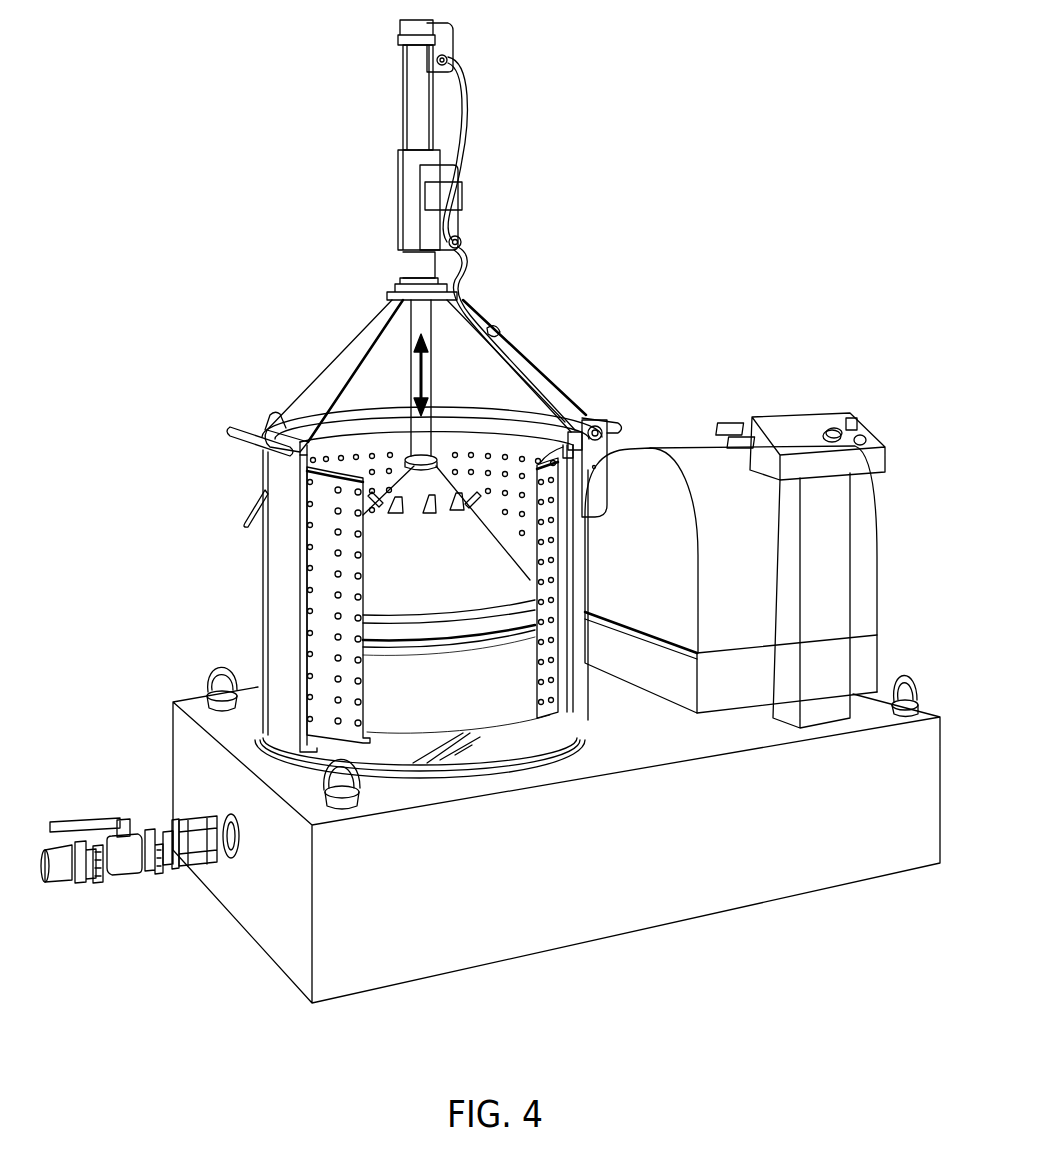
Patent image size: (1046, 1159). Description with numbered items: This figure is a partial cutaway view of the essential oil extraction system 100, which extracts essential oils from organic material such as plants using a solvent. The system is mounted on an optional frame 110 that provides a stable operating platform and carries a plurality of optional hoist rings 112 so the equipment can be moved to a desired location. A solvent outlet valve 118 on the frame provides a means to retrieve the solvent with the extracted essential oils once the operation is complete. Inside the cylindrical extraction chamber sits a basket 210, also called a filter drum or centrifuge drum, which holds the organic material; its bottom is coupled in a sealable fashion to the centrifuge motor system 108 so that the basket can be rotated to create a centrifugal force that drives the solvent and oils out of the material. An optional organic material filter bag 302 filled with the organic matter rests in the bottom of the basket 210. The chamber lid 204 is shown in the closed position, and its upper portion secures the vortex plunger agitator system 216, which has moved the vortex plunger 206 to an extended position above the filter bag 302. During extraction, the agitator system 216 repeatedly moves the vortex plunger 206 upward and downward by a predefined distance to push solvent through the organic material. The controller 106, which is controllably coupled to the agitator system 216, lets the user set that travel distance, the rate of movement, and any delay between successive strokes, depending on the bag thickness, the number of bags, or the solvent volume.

The essential oil extraction system 100 is at (228, 165).
The controller 106 is at (843, 562).
The centrifuge motor system 108 is at (697, 446).
The frame 110 is at (703, 887).
The hoist rings 112 is at (222, 662).
The solvent outlet valve 118 is at (127, 860).
The chamber lid 204 is at (323, 348).
The vortex plunger 206 is at (507, 572).
The basket 210 is at (320, 600).
The vortex plunger agitator system 216 is at (473, 126).
The organic material filter bag 302 is at (478, 708).